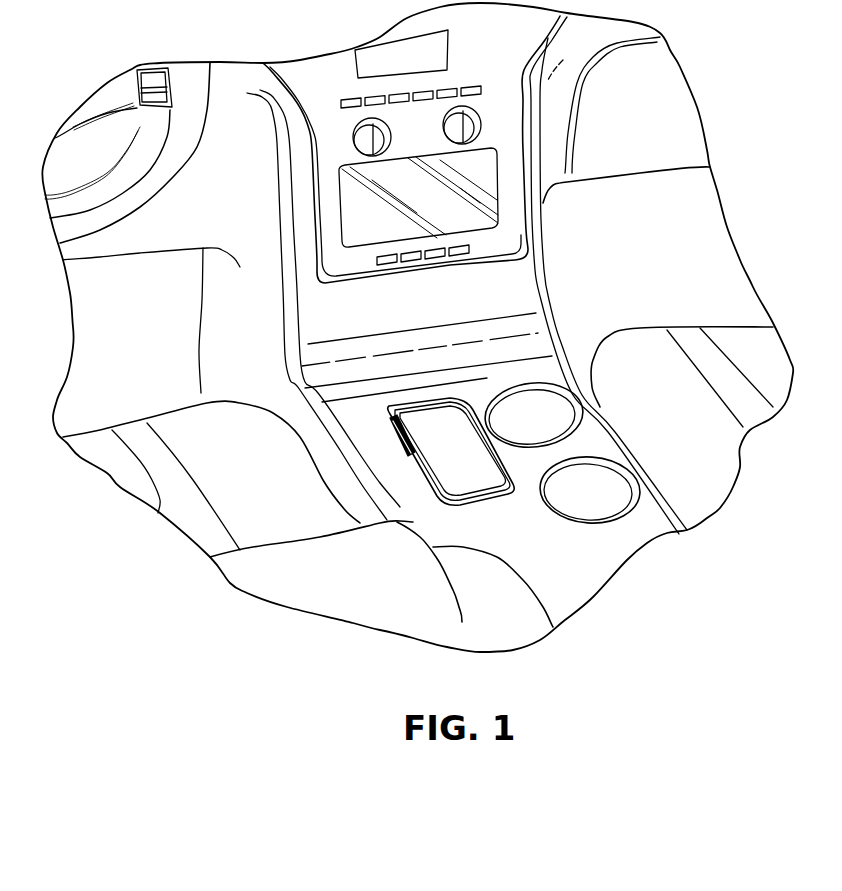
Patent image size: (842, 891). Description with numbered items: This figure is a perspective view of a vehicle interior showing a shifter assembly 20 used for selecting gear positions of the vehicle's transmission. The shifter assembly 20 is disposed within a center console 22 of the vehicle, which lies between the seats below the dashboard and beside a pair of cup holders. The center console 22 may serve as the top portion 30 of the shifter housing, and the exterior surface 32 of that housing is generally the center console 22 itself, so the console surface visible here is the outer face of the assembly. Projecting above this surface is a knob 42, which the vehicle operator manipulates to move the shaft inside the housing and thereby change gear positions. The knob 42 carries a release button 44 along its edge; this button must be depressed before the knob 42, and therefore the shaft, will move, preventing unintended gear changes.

The shifter assembly 20 is at (505, 509).
The center console 22 is at (473, 392).
The top portion 30 is at (427, 500).
The exterior surface 32 is at (515, 470).
The knob 42 is at (430, 417).
The release button 44 is at (388, 425).